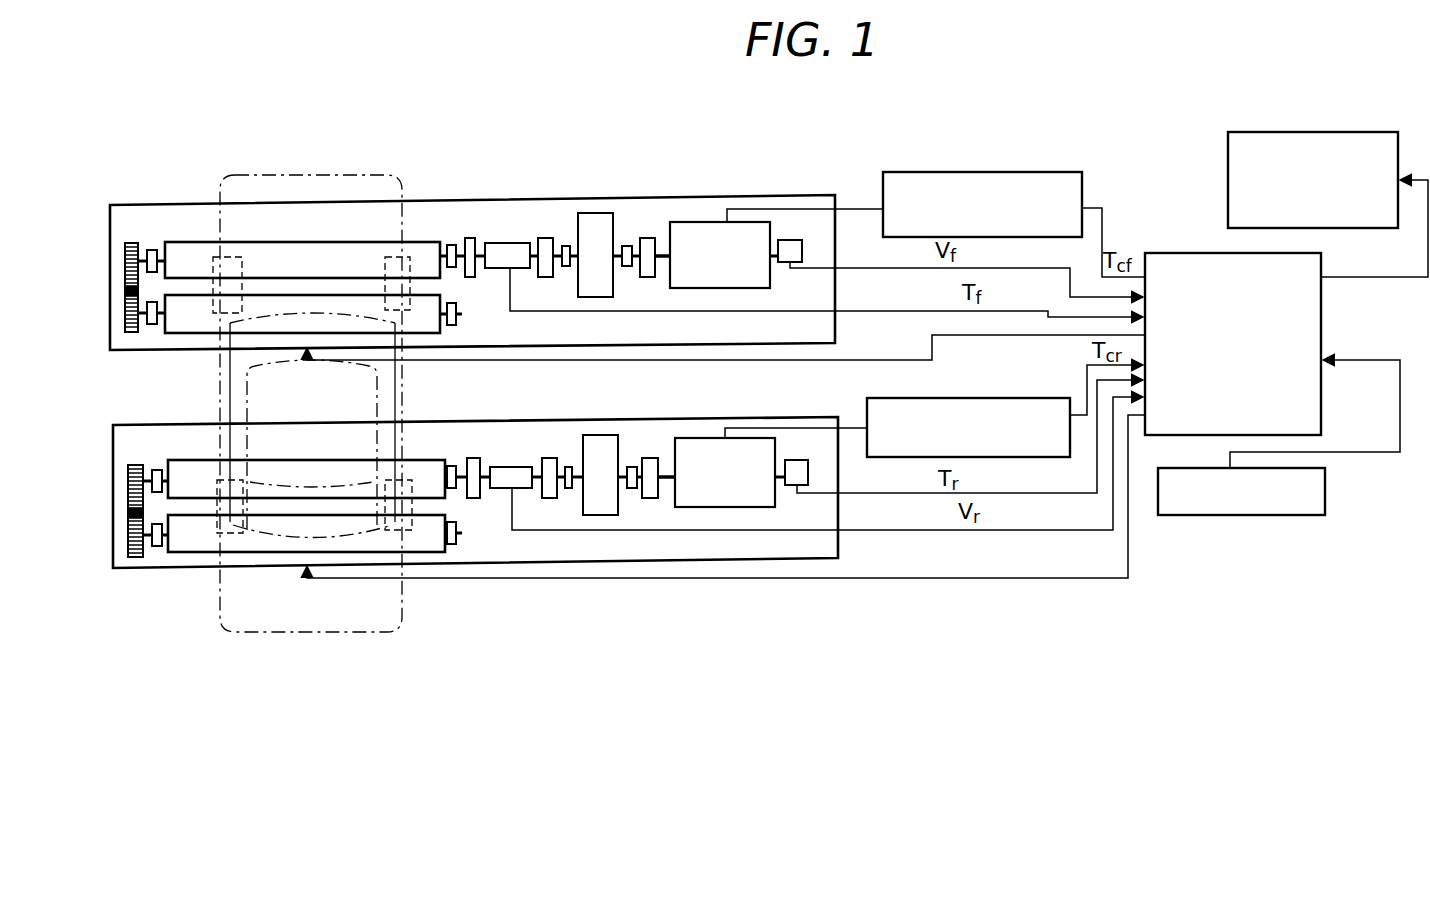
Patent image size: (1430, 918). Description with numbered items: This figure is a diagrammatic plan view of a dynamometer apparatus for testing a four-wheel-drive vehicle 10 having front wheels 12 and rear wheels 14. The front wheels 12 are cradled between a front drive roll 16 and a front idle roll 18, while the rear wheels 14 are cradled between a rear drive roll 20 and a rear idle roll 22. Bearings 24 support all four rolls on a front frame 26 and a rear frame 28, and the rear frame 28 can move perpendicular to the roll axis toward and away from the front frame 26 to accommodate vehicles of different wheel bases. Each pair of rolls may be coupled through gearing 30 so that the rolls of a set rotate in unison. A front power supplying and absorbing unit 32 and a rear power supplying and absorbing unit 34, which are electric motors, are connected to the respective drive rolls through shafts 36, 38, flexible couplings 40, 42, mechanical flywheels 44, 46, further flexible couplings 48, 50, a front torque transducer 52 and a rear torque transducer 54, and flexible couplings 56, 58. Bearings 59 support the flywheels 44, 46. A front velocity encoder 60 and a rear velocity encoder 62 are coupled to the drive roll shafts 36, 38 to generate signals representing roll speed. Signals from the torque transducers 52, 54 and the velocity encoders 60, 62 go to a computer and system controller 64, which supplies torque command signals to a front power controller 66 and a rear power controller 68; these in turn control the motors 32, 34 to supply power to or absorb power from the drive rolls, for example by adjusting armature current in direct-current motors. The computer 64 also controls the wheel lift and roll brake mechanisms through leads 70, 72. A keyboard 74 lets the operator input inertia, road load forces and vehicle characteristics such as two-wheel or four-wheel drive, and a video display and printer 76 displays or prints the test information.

The 4 WD vehicle 10 is at (424, 178).
The front wheels 12 is at (402, 262).
The rear wheels 14 is at (405, 530).
The front drive roll 16 is at (190, 242).
The front idle roll 18 is at (185, 335).
The rear drive roll 20 is at (372, 460).
The rear idle roll 22 is at (260, 552).
The bearings 24 is at (150, 250).
The front frame 26 is at (118, 205).
The rear frame 28 is at (196, 568).
The gearing 30 is at (118, 240).
The front power supplying and absorbing unit 32 is at (702, 222).
The rear power supplying and absorbing unit 34 is at (722, 438).
The front drive roll shaft 36 is at (662, 250).
The rear drive roll shaft 38 is at (665, 474).
The flexible coupling 40 is at (645, 238).
The flexible coupling 42 is at (648, 458).
The mechanical flywheel 44 is at (592, 213).
The mechanical flywheel 46 is at (603, 435).
The flexible coupling 48 is at (546, 238).
The flexible coupling 50 is at (549, 458).
The front torque transducer 52 is at (505, 243).
The rear torque transducer 54 is at (515, 467).
The flexible coupling 56 is at (478, 238).
The flexible coupling 58 is at (480, 460).
The bearings 59 is at (566, 267).
The front velocity encoder 60 is at (802, 272).
The rear velocity encoder 62 is at (797, 485).
The computer and system controller 64 is at (1187, 253).
The front power controller 66 is at (958, 172).
The rear power controller 68 is at (975, 398).
The lead 70 is at (706, 360).
The lead 72 is at (638, 578).
The keyboard 74 is at (1228, 515).
The video display and printer 76 is at (1287, 132).